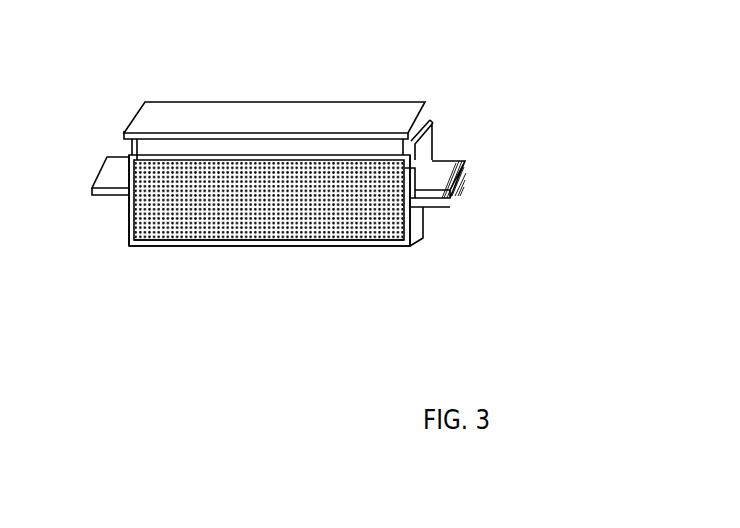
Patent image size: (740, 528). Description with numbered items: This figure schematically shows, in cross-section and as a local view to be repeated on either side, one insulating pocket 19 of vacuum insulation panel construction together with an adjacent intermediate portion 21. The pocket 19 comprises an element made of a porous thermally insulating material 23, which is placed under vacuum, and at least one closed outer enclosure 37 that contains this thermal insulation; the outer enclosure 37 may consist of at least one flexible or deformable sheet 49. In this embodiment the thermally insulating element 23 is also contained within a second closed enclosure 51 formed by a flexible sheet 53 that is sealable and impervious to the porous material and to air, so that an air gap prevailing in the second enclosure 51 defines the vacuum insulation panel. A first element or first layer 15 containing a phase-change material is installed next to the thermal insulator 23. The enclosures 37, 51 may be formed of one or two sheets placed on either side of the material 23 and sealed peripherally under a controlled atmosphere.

The first layer containing a PCM 15 is at (280, 147).
The pocket 19 is at (248, 250).
The intermediate portion 21 is at (435, 171).
The thermally insulating material 23 is at (321, 242).
The outer enclosure 37 is at (417, 252).
The flexible or deformable sheet 49 is at (85, 315).
The second closed enclosure 51 is at (355, 143).
The flexible sheet 53 is at (150, 153).